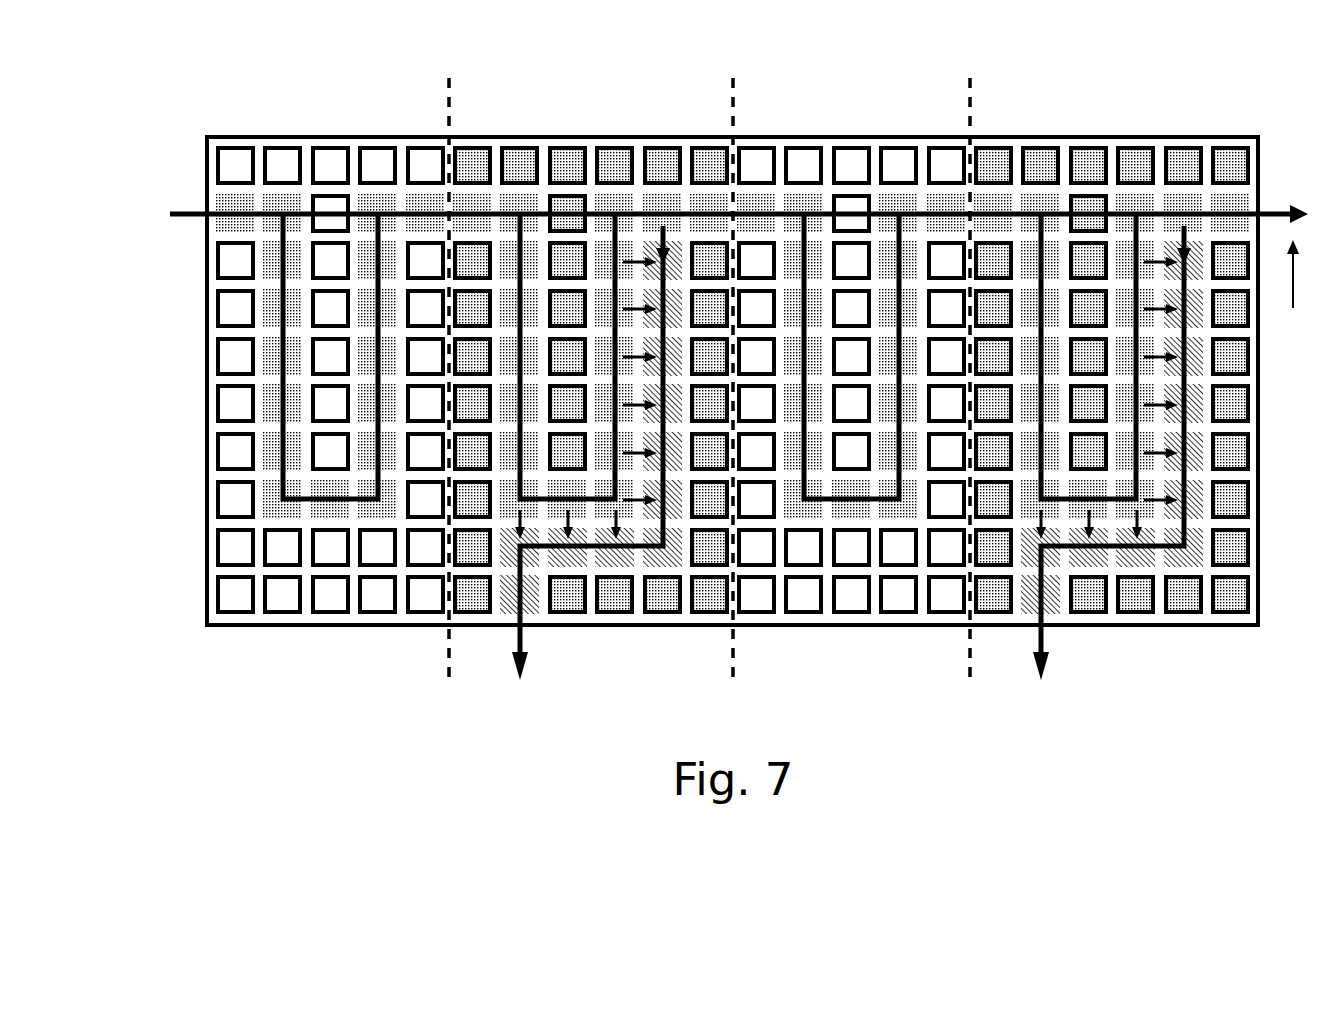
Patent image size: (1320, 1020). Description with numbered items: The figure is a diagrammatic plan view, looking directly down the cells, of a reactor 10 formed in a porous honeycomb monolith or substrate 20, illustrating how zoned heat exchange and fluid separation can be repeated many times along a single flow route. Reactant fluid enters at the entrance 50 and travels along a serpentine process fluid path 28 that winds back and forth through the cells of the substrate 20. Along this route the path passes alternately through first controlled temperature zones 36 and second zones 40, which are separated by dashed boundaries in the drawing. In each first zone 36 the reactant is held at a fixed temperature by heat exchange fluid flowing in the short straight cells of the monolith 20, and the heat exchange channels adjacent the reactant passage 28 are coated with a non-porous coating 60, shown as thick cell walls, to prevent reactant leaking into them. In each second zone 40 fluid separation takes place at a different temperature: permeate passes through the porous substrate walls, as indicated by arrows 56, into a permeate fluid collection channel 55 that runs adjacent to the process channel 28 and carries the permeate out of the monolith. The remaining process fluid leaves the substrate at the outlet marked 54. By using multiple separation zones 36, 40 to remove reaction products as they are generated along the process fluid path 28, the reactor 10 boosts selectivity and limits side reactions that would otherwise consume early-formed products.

The reactor 10 is at (338, 678).
The porous honeycomb monolith 20 is at (207, 163).
The process fluid path 28 is at (190, 222).
The entrance 50 is at (699, 442).
The first controlled temperature zone 36 is at (330, 167).
The second zone 40 is at (614, 167).
The outlet flow 54 is at (1292, 293).
The permeate fluid collection channel 55 is at (603, 560).
The permeate flow arrows 56 is at (637, 463).
The non-porous coating 60 is at (252, 407).